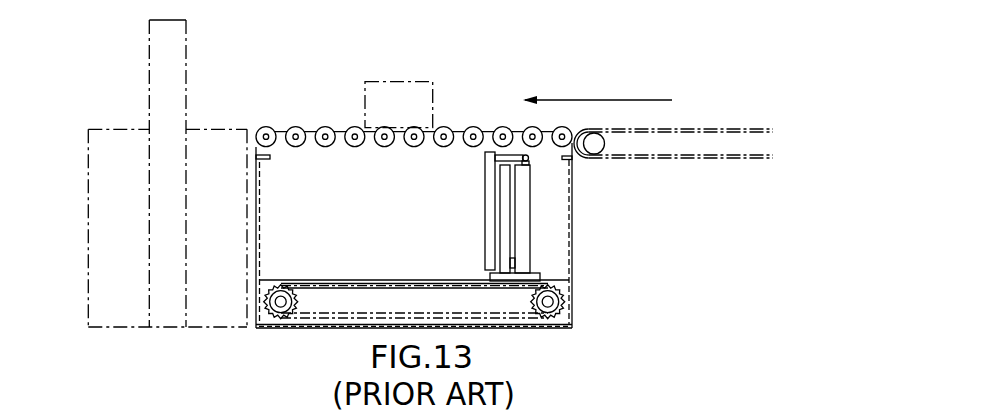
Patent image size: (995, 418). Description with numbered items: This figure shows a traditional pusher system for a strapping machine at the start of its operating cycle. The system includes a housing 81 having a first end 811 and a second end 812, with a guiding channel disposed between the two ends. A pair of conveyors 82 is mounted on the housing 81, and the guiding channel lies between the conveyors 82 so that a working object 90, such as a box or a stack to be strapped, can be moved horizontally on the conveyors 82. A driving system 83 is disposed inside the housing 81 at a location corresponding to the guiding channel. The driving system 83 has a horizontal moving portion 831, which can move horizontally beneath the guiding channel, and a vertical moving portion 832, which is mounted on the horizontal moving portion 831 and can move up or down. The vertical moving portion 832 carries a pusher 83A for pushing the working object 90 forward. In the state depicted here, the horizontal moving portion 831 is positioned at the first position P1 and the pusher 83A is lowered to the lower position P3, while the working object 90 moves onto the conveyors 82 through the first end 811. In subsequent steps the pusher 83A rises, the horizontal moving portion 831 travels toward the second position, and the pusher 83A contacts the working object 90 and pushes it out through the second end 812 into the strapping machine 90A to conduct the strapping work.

The housing 81 is at (463, 263).
The first end 811 is at (572, 190).
The second end 812 is at (258, 302).
The conveyors 82 is at (294, 122).
The driving system 83 is at (435, 216).
The pusher 83A is at (487, 203).
The horizontal moving portion 831 is at (490, 277).
The vertical moving portion 832 is at (505, 239).
The working object 90 is at (365, 100).
The strapping machine 90A is at (90, 250).
The first position P1 is at (547, 232).
The lower position P3 is at (474, 157).